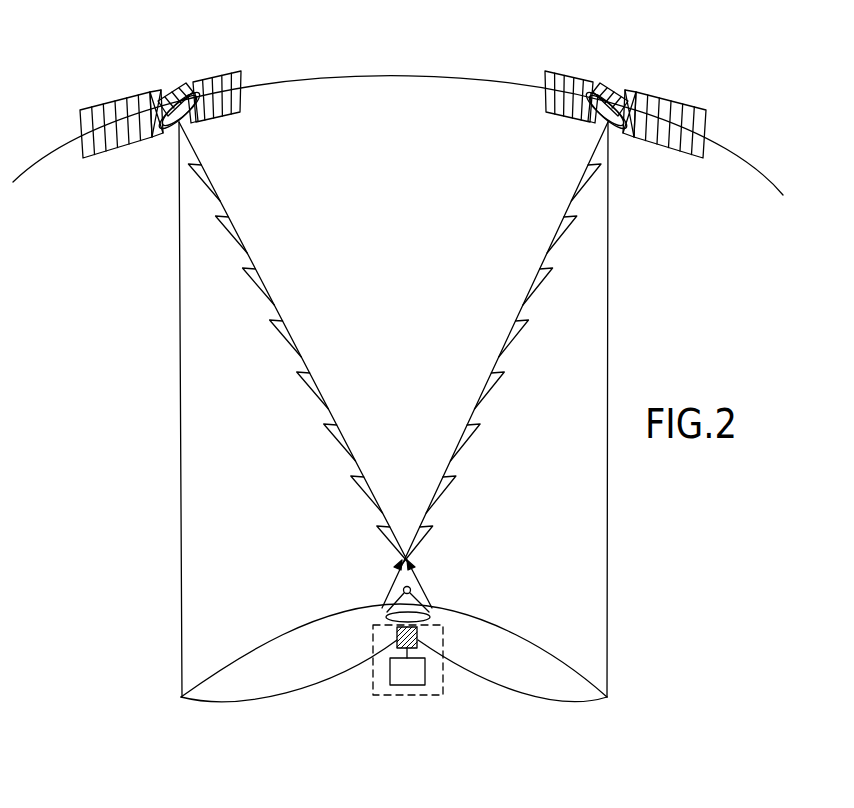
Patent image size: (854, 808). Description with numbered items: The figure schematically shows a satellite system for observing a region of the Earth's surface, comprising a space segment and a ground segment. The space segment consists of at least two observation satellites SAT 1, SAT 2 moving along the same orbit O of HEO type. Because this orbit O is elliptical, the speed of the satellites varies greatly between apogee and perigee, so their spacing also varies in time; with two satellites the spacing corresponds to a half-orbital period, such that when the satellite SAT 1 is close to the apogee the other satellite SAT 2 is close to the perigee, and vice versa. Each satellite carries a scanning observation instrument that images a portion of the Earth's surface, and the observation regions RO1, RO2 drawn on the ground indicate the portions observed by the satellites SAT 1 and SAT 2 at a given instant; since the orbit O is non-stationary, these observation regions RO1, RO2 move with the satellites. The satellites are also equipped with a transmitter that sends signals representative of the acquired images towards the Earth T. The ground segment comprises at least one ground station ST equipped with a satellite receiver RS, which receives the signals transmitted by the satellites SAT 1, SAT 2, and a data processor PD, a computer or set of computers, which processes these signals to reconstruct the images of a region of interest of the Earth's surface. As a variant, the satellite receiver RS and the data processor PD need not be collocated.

The observation satellite SAT 1 is at (175, 93).
The observation satellite SAT 2 is at (612, 88).
The orbit O is at (403, 78).
The Earth T is at (302, 619).
The satellite receiver RS is at (385, 628).
The ground station ST is at (440, 628).
The data processor PD is at (411, 677).
The observation region RO1 is at (235, 670).
The observation region RO2 is at (562, 678).